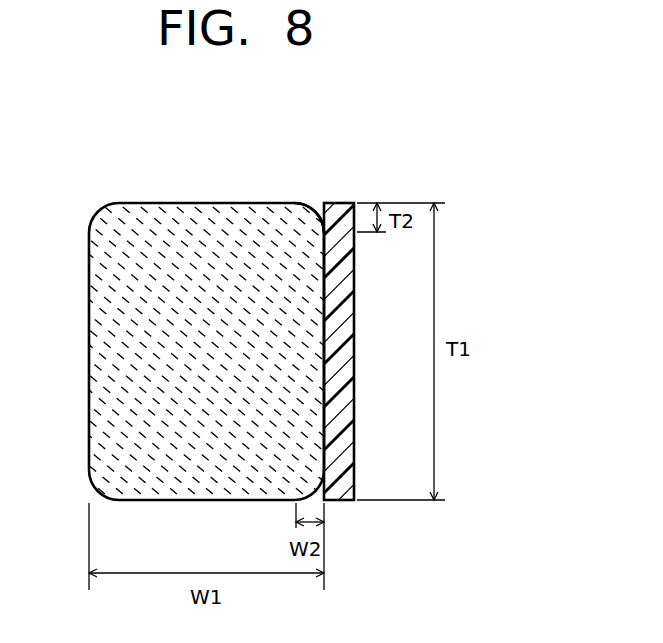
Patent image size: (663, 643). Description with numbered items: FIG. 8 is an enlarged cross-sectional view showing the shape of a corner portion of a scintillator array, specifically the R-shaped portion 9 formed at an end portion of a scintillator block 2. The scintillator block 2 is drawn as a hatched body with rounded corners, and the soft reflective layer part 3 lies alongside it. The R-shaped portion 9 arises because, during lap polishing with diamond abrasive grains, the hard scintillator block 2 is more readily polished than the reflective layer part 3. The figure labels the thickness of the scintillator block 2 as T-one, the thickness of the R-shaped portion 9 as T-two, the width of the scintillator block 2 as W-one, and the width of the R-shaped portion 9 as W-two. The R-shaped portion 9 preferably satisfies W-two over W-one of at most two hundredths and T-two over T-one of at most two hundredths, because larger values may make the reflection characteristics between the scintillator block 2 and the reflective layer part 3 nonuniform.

The scintillator block 2 is at (152, 218).
The reflective layer part 3 is at (333, 210).
The R-shaped portion 9 is at (313, 207).